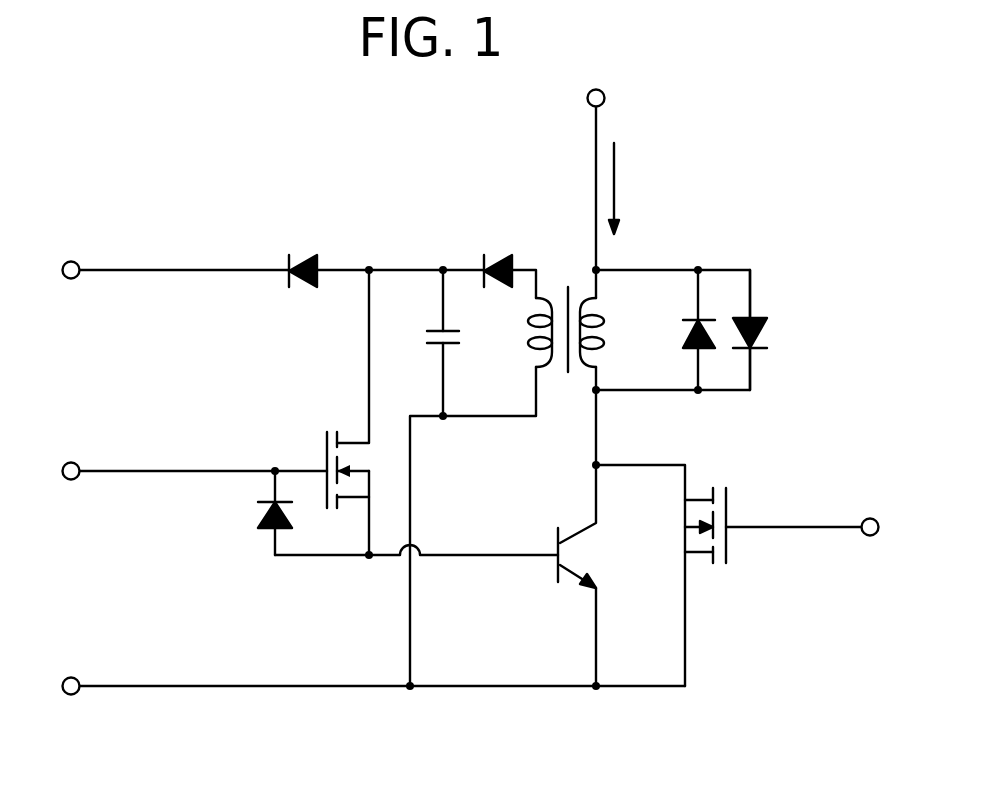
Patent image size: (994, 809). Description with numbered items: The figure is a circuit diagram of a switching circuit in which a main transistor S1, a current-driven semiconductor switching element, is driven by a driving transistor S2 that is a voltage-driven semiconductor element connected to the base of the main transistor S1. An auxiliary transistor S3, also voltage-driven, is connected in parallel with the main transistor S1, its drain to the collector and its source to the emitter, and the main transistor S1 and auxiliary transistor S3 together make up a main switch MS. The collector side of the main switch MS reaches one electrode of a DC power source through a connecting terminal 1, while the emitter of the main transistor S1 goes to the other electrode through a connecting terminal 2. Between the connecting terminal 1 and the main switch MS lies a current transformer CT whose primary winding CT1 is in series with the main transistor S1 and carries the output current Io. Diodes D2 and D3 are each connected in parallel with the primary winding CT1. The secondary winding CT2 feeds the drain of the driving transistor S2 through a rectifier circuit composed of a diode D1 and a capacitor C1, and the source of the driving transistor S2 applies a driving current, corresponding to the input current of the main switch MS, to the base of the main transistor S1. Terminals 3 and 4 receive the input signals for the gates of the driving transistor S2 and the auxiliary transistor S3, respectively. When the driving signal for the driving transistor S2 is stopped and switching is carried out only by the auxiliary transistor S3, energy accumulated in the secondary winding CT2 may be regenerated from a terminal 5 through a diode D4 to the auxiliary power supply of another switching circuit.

The connecting terminal 1 is at (605, 98).
The connecting terminal 2 is at (71, 677).
The terminal 3 is at (71, 462).
The terminal 4 is at (872, 537).
The terminal 5 is at (71, 262).
The diode D1 is at (497, 257).
The diode D2 is at (690, 337).
The diode D3 is at (762, 333).
The diode D4 is at (309, 255).
The capacitor C1 is at (432, 345).
The current transformer CT is at (572, 283).
The primary winding CT1 is at (575, 278).
The secondary winding CT2 is at (523, 325).
The main transistor S1 is at (557, 575).
The driving transistor S2 is at (325, 450).
The auxiliary transistor S3 is at (730, 548).
The main switch MS is at (672, 538).
The output current Io is at (628, 188).